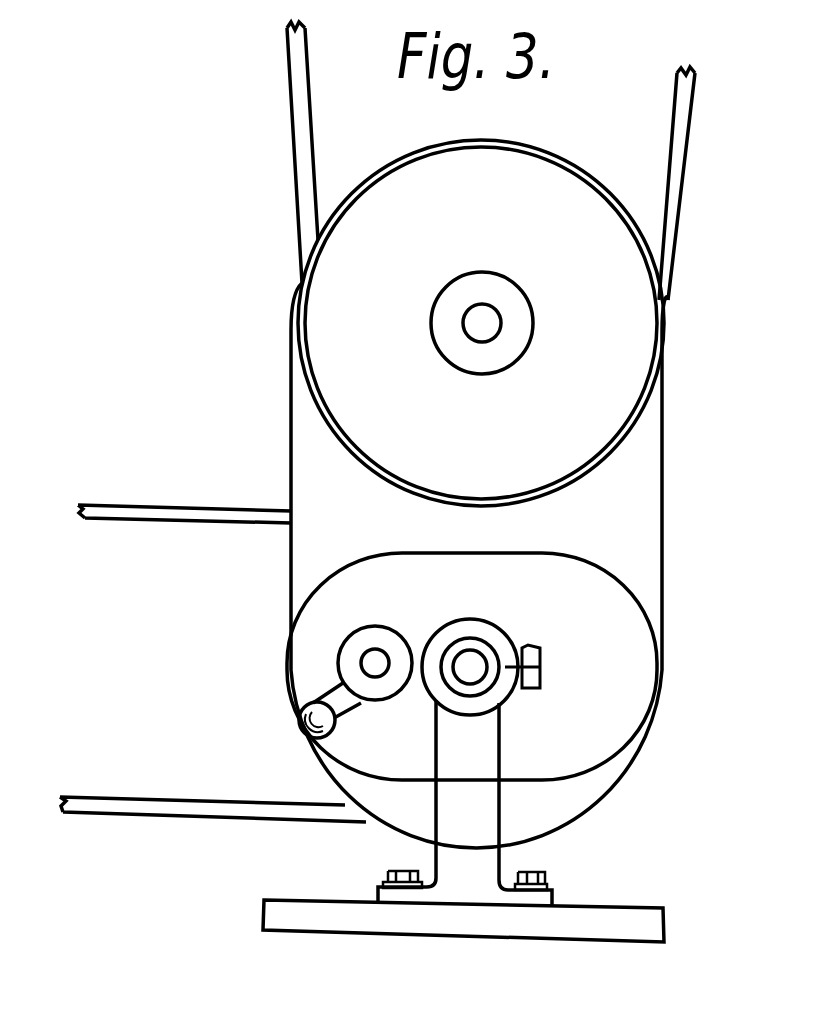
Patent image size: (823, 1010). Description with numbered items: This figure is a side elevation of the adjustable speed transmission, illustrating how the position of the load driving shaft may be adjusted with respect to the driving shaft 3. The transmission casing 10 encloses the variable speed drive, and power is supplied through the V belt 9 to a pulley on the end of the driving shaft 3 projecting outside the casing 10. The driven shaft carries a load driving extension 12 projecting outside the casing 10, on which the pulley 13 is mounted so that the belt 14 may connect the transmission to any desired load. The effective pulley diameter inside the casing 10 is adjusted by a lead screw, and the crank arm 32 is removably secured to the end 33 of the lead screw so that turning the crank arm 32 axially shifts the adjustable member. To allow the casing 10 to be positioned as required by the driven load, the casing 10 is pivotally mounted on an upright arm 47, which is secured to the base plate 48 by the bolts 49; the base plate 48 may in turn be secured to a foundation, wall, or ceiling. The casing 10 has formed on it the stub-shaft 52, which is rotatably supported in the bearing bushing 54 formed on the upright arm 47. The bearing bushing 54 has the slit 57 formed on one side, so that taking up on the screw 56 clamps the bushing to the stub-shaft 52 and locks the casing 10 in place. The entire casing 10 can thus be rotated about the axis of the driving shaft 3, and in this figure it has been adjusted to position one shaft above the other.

The driving shaft 3 is at (465, 677).
The V belt 9 is at (207, 508).
The transmission casing 10 is at (663, 539).
The load driving extension 12 is at (493, 327).
The pulley 13 is at (566, 481).
The belt 14 is at (679, 210).
The crank arm 32 is at (346, 710).
The end of the lead screw 33 is at (377, 656).
The upright arm 47 is at (507, 760).
The base plate 48 is at (612, 906).
The bolts 49 is at (398, 870).
The stub-shaft 52 is at (453, 640).
The bearing bushing 54 is at (480, 620).
The screw 56 is at (528, 646).
The slit 57 is at (543, 666).